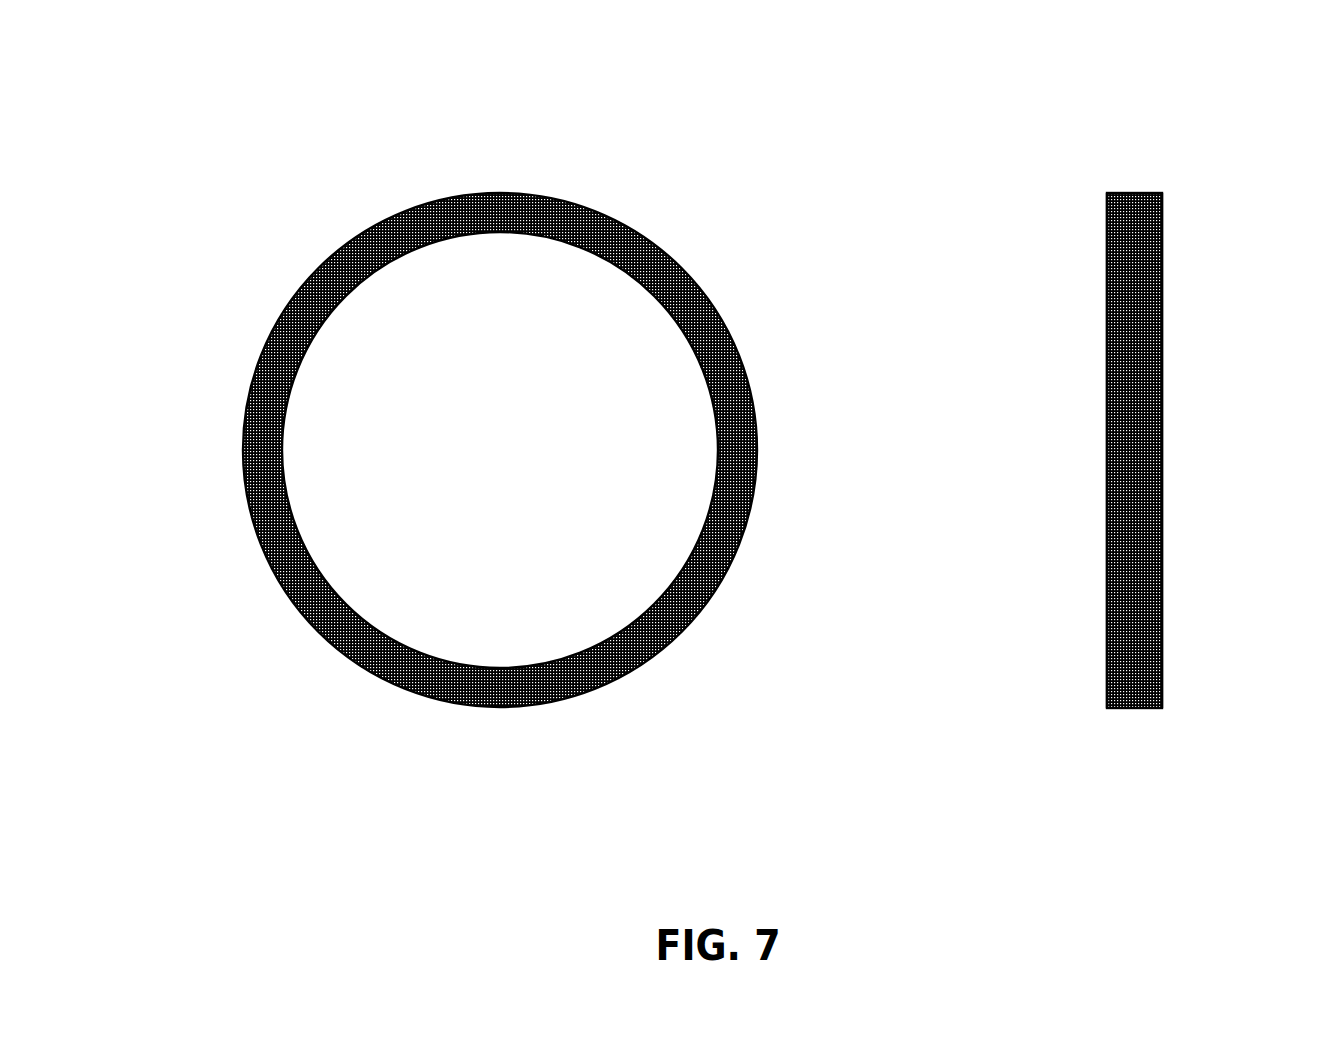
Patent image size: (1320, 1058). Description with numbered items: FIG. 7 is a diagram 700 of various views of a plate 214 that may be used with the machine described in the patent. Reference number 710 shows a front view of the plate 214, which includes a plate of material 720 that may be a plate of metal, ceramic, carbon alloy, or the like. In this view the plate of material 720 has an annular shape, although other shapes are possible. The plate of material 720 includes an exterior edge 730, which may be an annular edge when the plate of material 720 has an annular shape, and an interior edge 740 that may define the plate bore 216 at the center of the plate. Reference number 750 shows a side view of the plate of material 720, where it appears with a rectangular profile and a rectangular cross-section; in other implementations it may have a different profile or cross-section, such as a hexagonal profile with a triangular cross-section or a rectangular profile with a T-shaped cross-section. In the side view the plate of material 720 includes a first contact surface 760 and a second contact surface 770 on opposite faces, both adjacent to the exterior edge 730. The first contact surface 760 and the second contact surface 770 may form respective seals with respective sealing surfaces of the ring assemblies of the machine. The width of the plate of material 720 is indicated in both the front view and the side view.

The diagram 700 is at (220, 62).
The front view 710 is at (268, 176).
The side view 750 is at (1062, 281).
The exterior edge 730 is at (262, 342).
The interior edge 740 is at (284, 418).
The first contact surface 760 is at (1107, 362).
The second contact surface 770 is at (1162, 418).
The plate of material 720 is at (243, 732).
The plate bore 216 is at (488, 450).
The plate 214 is at (813, 123).